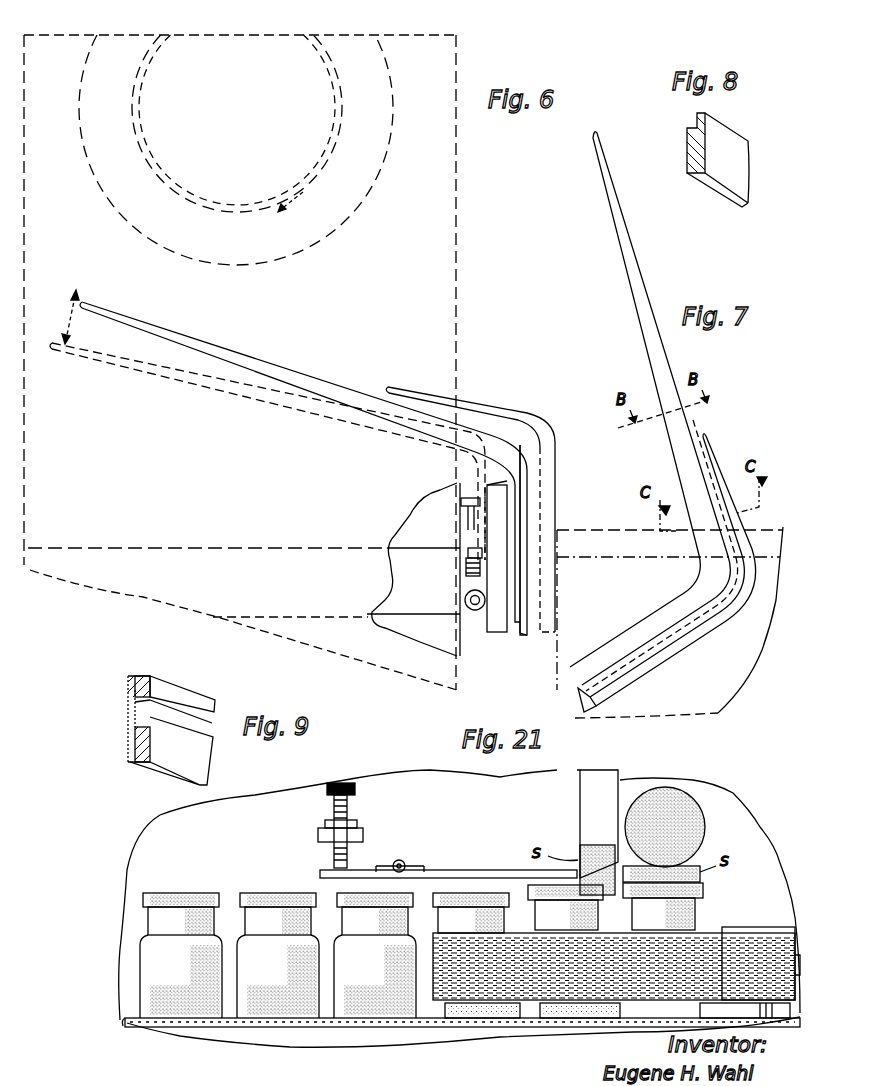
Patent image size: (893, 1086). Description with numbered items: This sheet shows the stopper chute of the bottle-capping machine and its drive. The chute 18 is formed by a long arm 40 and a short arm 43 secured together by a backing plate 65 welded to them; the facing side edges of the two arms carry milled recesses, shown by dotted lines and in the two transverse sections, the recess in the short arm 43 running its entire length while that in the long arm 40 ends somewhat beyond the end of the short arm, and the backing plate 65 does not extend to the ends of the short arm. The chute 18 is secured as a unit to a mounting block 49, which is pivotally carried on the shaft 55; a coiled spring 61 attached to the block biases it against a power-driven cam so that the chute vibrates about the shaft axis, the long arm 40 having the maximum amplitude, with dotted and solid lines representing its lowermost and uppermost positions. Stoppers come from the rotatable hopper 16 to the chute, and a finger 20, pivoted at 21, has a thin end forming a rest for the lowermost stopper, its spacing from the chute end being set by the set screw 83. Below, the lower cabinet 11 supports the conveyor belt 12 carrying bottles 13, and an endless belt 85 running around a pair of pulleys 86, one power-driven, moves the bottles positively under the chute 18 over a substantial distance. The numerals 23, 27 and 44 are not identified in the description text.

In FIG. 21, the lower cabinet 11 is at (276, 1033).
In FIG. 21, the conveyor belt 12 is at (122, 1016).
In FIG. 21, the bottles 13 is at (215, 922).
In FIG. 6, the rotatable hopper 16 is at (231, 207).
In FIG. 21, the chute 18 is at (580, 826).
In FIG. 21, the finger 20 is at (500, 870).
In FIG. 21, the pivot 21 is at (406, 862).
In FIG. 21, the ball 23 is at (700, 817).
In FIG. 6, the outer circle 27 is at (172, 250).
In FIG. 6, the long chute arm 40 is at (207, 378).
In FIG. 7, the long chute arm 40 is at (648, 341).
In FIG. 8, the long chute arm 40 is at (718, 190).
In FIG. 9, the long chute arm 40 is at (166, 766).
In FIG. 6, the short arm 43 is at (560, 481).
In FIG. 7, the short arm 43 is at (735, 620).
In FIG. 9, the short arm 43 is at (190, 692).
In FIG. 7, the housing 44 is at (670, 636).
In FIG. 6, the mounting block 49 is at (475, 576).
In FIG. 6, the shaft 55 is at (476, 612).
In FIG. 6, the coiled spring 61 is at (459, 506).
In FIG. 6, the backing plate 65 is at (480, 406).
In FIG. 7, the backing plate 65 is at (640, 657).
In FIG. 9, the backing plate 65 is at (130, 733).
In FIG. 21, the set screw 83 is at (333, 797).
In FIG. 21, the endless belt 85 is at (500, 1036).
In FIG. 21, the pulleys 86 is at (752, 926).